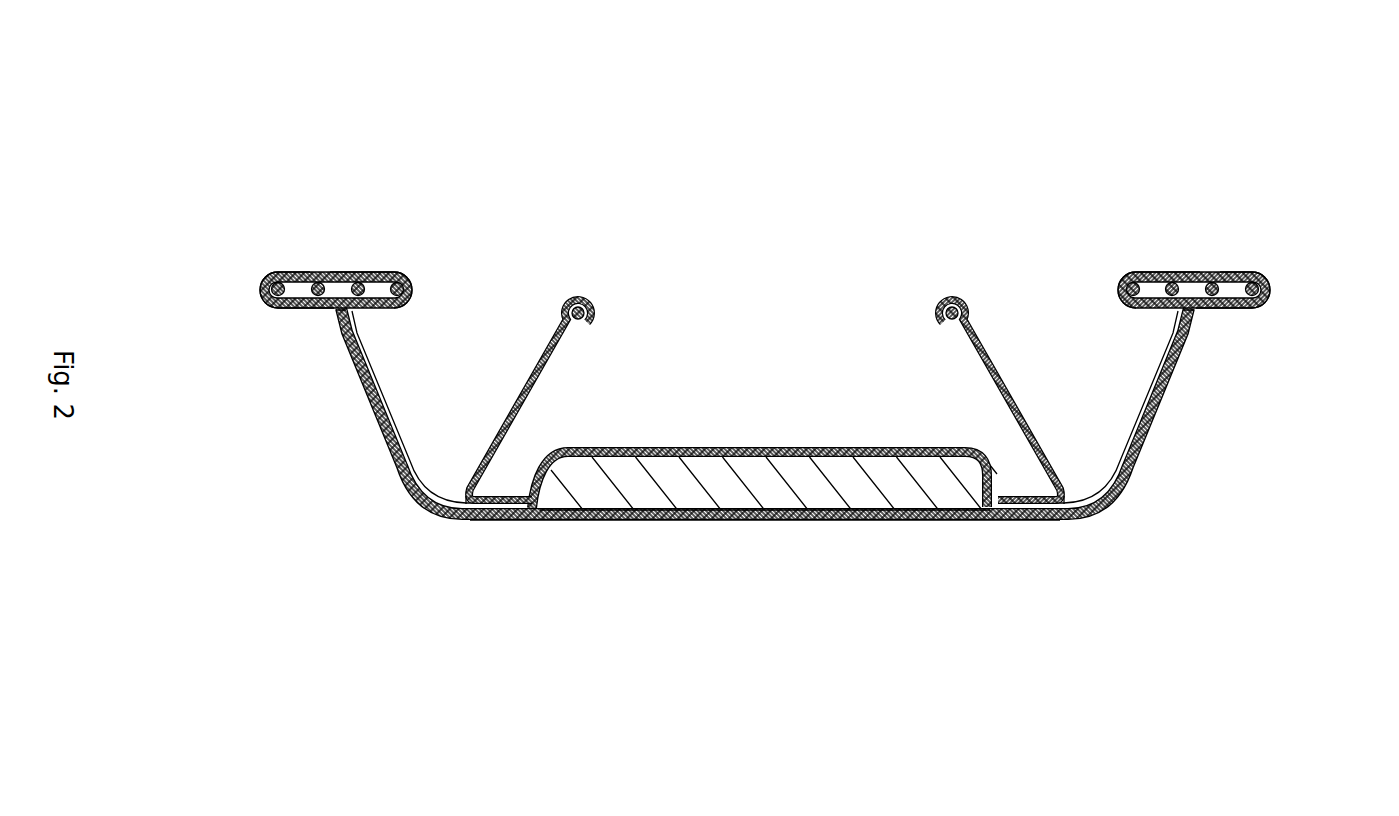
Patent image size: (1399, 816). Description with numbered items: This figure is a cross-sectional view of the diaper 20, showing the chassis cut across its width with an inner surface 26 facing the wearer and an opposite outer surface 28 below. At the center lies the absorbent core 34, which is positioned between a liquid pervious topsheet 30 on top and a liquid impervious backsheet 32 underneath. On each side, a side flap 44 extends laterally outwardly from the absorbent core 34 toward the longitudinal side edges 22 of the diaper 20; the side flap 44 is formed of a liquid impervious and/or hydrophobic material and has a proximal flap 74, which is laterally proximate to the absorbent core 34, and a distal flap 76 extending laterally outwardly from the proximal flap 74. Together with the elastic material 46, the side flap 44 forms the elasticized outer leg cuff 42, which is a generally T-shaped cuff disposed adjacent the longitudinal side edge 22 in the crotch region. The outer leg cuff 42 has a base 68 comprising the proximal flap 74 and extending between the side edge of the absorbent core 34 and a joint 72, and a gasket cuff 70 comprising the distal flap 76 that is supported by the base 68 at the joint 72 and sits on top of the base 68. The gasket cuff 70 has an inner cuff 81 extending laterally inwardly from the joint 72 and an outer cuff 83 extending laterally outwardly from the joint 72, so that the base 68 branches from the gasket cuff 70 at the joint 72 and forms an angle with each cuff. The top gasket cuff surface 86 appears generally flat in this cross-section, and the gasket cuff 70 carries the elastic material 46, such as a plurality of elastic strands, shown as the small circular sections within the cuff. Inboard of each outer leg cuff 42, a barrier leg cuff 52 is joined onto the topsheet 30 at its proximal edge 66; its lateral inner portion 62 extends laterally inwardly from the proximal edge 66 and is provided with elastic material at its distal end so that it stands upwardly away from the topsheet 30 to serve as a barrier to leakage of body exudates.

The diaper 20 is at (737, 213).
The longitudinal side edges 22 is at (258, 286).
The inner surface 26 is at (851, 293).
The outer surface 28 is at (935, 575).
The topsheet 30 is at (738, 447).
The backsheet 32 is at (845, 520).
The absorbent core 34 is at (729, 488).
The elasticized outer leg cuff 42 is at (417, 215).
The side flap 44 is at (752, 507).
The elastic material 46 is at (395, 283).
The barrier leg cuff 52 is at (586, 300).
The lateral inner portion 62 is at (541, 368).
The proximal edge 66 is at (473, 487).
The base 68 is at (370, 438).
The gasket cuff 70 is at (262, 280).
The joint 72 is at (305, 312).
The proximal flap 74 is at (366, 398).
The distal flap 76 is at (262, 318).
The inner cuff 81 is at (410, 278).
The outer cuff 83 is at (270, 268).
The top gasket cuff surface 86 is at (389, 270).